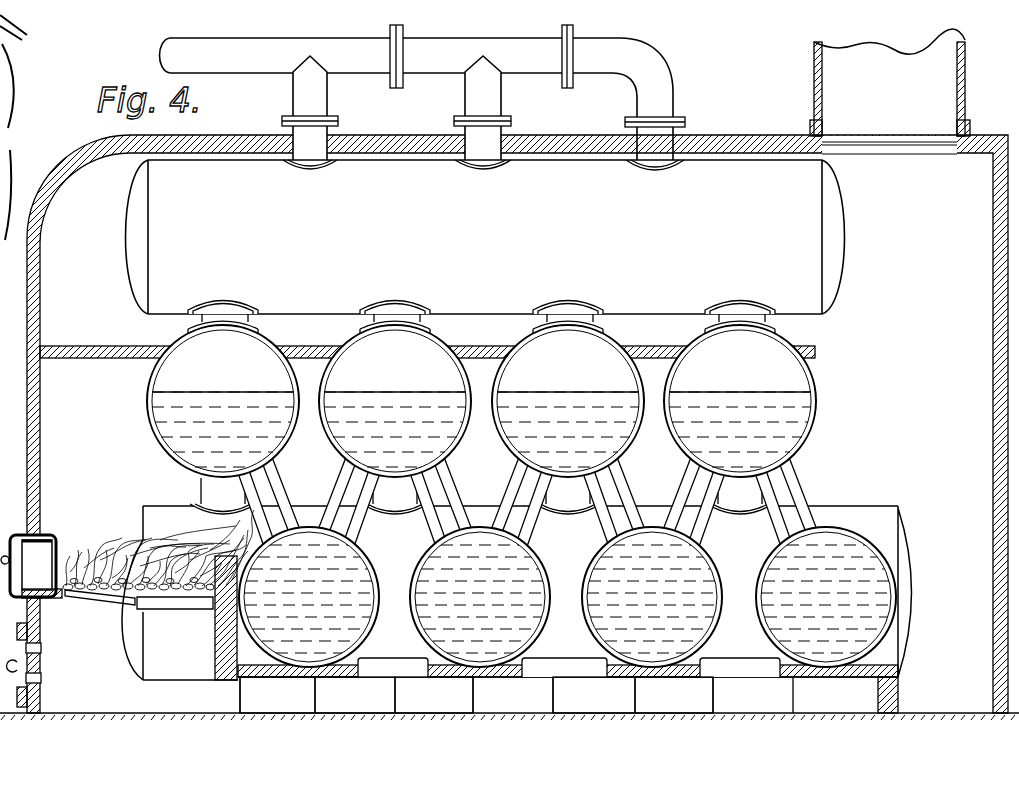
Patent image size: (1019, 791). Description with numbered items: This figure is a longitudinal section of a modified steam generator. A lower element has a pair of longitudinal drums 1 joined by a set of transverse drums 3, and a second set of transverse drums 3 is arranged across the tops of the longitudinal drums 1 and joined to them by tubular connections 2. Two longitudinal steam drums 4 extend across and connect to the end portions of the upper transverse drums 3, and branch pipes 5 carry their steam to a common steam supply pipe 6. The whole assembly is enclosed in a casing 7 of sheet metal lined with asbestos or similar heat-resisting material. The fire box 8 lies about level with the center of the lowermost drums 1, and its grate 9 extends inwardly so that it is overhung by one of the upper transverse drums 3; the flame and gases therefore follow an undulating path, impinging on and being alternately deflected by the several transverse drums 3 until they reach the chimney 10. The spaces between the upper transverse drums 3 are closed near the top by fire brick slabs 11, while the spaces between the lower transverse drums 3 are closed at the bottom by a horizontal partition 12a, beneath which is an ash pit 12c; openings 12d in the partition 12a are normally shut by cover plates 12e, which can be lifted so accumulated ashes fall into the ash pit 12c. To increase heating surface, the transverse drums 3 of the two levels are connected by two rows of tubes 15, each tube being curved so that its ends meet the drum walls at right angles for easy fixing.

The longitudinal drum 1 is at (517, 609).
The tubular connection 2 is at (399, 507).
The transverse drum 3 is at (521, 484).
The longitudinal steam drum 4 is at (485, 237).
The branch pipe 5 is at (483, 113).
The steam supply pipe 6 is at (417, 92).
The casing 7 is at (40, 307).
The fire box 8 is at (158, 550).
The grate 9 is at (104, 599).
The chimney 10 is at (890, 91).
The fire brick slab 11 is at (103, 358).
The horizontal partition 12a is at (452, 670).
The ash pit 12c is at (277, 695).
The opening 12d is at (666, 677).
The cover plate 12e is at (588, 684).
The connecting tube 15 is at (266, 500).